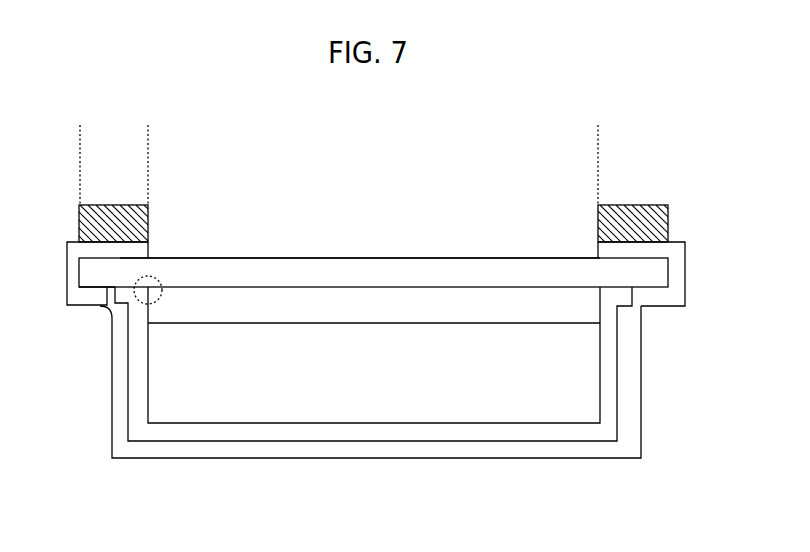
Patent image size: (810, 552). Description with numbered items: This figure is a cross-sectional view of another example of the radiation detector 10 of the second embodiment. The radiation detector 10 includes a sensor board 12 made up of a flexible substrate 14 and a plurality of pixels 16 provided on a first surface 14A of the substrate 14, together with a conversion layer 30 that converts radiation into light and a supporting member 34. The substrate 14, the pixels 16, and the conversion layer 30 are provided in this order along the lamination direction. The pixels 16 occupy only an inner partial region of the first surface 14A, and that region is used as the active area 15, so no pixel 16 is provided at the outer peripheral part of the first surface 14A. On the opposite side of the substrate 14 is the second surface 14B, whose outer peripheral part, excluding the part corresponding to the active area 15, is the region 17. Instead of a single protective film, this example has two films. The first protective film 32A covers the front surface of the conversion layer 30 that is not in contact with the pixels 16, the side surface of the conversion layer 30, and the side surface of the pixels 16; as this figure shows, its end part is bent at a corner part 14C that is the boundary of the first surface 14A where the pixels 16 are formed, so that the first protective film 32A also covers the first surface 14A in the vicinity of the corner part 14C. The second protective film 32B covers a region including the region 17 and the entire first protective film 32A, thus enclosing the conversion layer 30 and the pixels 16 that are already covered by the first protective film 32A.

The radiation detector 10 is at (723, 514).
The sensor board 12 is at (723, 255).
The substrate 14 is at (660, 270).
The first surface 14A is at (105, 288).
The second surface 14B is at (338, 258).
The corner part 14C is at (140, 305).
The active area 15 is at (598, 179).
The pixels 16 is at (592, 312).
The region 17 is at (148, 179).
The conversion layer 30 is at (590, 388).
The first protective film 32A is at (370, 430).
The second protective film 32B is at (300, 452).
The supporting member 34 is at (640, 216).